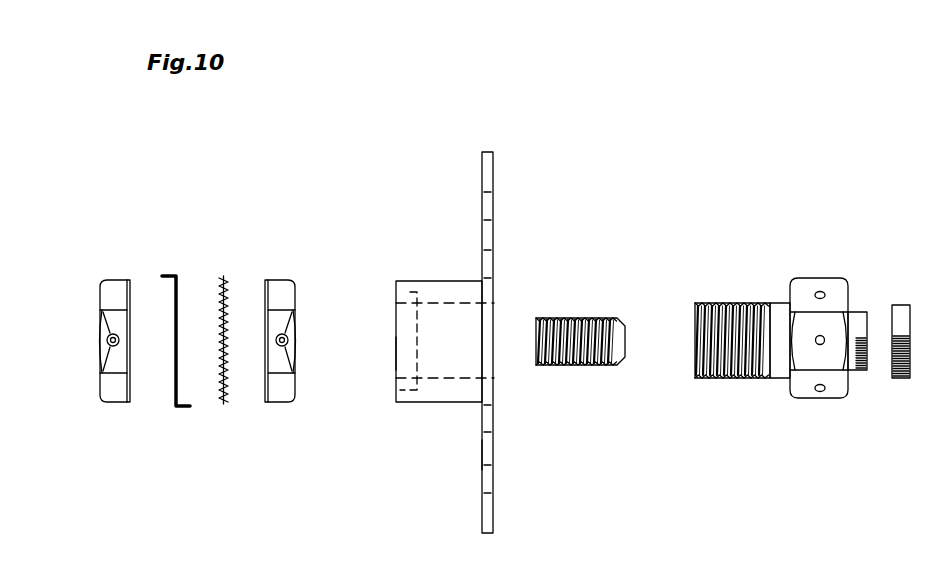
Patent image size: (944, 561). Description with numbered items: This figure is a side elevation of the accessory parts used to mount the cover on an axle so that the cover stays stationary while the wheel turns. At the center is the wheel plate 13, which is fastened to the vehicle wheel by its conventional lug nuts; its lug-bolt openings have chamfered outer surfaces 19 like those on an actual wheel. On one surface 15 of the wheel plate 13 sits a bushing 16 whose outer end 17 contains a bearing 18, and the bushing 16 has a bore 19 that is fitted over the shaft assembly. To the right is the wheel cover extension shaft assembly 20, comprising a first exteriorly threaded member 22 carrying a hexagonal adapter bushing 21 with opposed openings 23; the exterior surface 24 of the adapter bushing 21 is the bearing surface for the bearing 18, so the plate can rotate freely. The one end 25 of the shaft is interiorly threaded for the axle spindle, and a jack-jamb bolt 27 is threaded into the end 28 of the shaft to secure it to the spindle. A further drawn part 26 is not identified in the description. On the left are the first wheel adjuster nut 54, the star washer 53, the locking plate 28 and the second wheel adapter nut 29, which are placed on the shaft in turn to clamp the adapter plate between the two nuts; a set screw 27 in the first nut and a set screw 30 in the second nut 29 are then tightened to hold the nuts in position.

The wheel plate 13 is at (495, 201).
The surface of the wheel plate 15 is at (453, 489).
The bushing 16 is at (439, 267).
The outer end of the bushing 17 is at (425, 420).
The bearing 18 is at (384, 261).
The chamfered outer surfaces / bore 19 is at (430, 437).
The wheel cover extension shaft assembly 20 is at (737, 291).
The adapter bushing 21 is at (837, 265).
The first exteriorly threaded member 22 is at (726, 255).
The opposed openings 23 is at (786, 437).
The exterior surface of the adapter bushing 24 is at (731, 420).
The end of the wheel mounting shaft 25 is at (894, 251).
The washer 26 is at (883, 421).
The jack-jamb bolt 27 is at (430, 335).
The locking plate 28 is at (422, 335).
The second wheel adapter nut 29 is at (110, 267).
The set screw 30 is at (80, 460).
The star washer 53 is at (230, 268).
The first wheel adjuster nut 54 is at (291, 267).